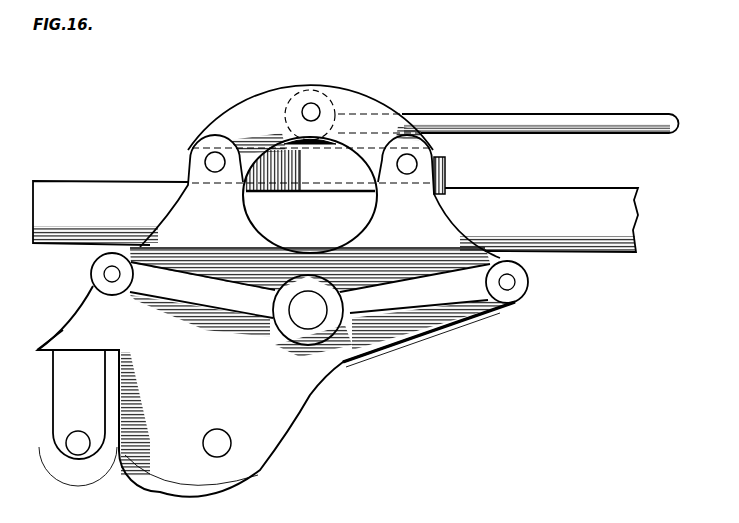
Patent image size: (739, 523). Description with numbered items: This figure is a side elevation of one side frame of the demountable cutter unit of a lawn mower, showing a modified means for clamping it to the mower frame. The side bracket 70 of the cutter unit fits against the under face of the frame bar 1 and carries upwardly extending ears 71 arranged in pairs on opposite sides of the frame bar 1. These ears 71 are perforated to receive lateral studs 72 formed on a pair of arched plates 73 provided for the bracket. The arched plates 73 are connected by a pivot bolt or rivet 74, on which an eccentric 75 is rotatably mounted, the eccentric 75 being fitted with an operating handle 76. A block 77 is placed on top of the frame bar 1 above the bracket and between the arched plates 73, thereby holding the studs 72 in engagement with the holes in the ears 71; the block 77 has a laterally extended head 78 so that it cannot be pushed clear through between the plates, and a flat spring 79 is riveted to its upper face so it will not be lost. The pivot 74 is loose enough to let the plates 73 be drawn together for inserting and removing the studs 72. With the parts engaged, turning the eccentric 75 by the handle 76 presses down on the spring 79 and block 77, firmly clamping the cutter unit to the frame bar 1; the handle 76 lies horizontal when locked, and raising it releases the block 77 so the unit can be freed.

The frame bar 1 is at (620, 197).
The side bracket 70 is at (282, 372).
The ear 71 is at (190, 155).
The stud 72 is at (215, 153).
The arched plate 73 is at (252, 100).
The pivot bolt 74 is at (316, 108).
The eccentric 75 is at (308, 88).
The operating handle 76 is at (590, 116).
The block 77 is at (310, 195).
The laterally extended head 78 is at (447, 175).
The flat spring 79 is at (284, 140).